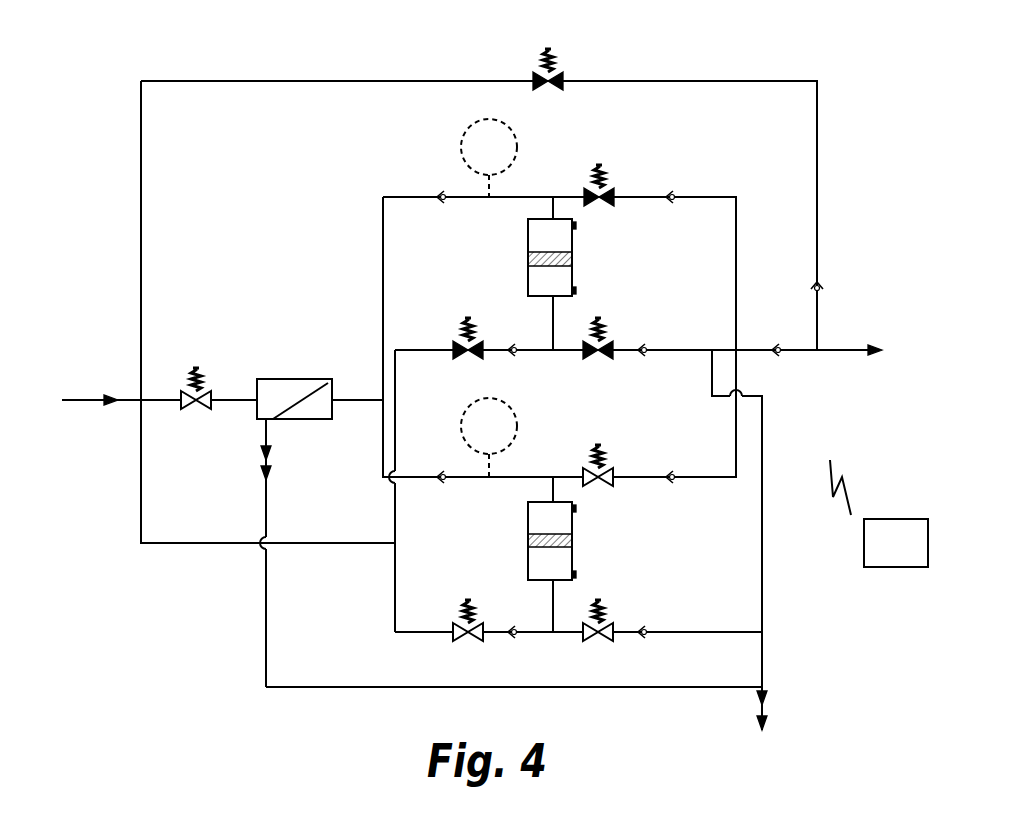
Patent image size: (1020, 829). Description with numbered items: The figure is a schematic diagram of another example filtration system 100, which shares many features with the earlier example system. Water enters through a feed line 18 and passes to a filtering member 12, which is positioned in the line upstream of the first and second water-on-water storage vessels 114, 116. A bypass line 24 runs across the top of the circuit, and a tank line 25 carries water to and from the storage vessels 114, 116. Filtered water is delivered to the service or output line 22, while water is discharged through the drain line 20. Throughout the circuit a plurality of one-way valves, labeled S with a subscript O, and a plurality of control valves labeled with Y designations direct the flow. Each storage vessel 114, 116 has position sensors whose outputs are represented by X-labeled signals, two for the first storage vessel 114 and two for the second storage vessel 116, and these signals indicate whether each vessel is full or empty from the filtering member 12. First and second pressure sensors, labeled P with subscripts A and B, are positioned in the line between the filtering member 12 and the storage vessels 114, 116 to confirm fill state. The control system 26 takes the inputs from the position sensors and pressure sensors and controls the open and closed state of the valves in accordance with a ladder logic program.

The filtration system 100 is at (100, 100).
The bypass line 24 is at (230, 80).
The tank line 25 is at (383, 260).
The feed line 18 is at (84, 398).
The filtering member 12 is at (302, 426).
The first water-on-water storage vessel 114 is at (512, 236).
The second water-on-water storage vessel 116 is at (512, 512).
The service or output line 22 is at (842, 349).
The drain line 20 is at (764, 658).
The control system 26 is at (896, 519).